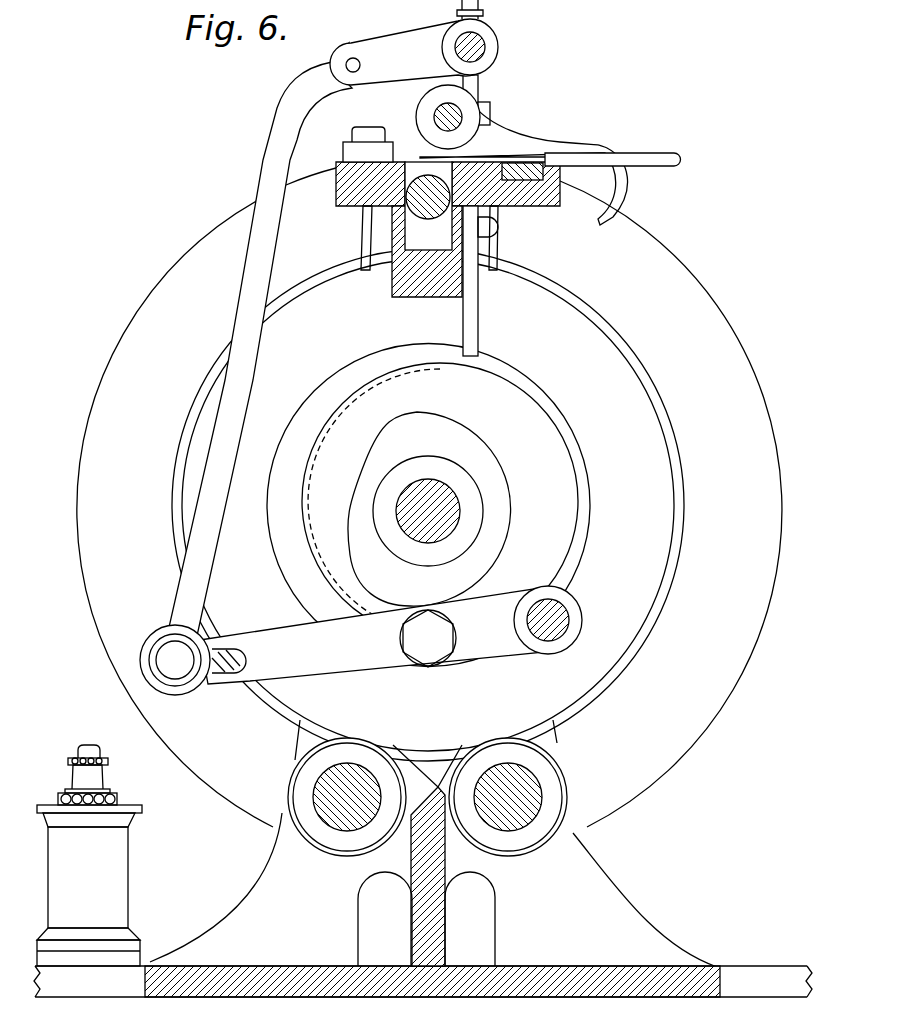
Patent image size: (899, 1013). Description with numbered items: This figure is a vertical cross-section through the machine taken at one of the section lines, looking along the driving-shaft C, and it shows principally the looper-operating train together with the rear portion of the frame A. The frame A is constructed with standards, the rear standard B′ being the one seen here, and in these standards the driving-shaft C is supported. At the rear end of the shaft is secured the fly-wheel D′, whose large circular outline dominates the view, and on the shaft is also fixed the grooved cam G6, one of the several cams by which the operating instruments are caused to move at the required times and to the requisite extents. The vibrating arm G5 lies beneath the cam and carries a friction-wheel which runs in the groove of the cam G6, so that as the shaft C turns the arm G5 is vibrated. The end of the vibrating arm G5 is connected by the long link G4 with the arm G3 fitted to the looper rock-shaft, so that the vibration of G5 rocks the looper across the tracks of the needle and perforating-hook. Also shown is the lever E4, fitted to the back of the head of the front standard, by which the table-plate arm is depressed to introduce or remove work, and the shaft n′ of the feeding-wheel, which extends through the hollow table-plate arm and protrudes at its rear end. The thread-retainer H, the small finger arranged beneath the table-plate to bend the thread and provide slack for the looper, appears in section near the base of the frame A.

The arm G3 is at (414, 62).
The lever E4 is at (548, 155).
The shaft n′ is at (428, 193).
The rear standard B′ is at (427, 517).
The link G4 is at (246, 369).
The fly-wheel D′ is at (429, 497).
The driving-shaft C is at (428, 511).
The cam G6 is at (429, 509).
The vibrating arm G5 is at (391, 635).
The thread-retainer H is at (427, 797).
The frame A is at (423, 858).